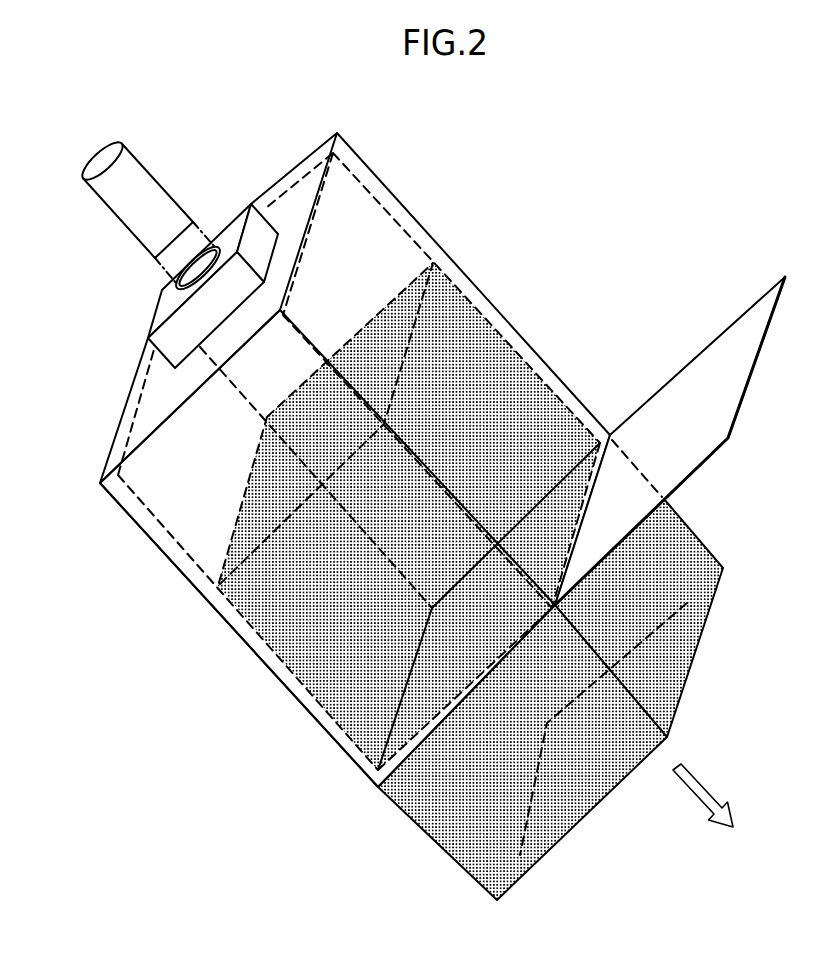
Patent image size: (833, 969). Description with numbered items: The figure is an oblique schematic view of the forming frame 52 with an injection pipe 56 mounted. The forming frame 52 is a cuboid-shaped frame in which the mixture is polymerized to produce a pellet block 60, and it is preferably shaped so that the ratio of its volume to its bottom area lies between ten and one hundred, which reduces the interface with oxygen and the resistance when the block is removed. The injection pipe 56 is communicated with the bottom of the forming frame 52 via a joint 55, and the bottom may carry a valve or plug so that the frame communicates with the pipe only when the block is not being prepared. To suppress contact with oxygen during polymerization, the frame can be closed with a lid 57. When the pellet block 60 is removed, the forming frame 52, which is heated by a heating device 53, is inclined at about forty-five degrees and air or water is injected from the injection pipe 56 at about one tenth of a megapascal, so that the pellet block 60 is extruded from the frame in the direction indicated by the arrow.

The forming frame 52 is at (355, 460).
The heating device 53 is at (297, 548).
The joint 55 is at (213, 259).
The injection pipe 56 is at (145, 193).
The lid 57 is at (670, 437).
The pellet block 60 is at (603, 699).